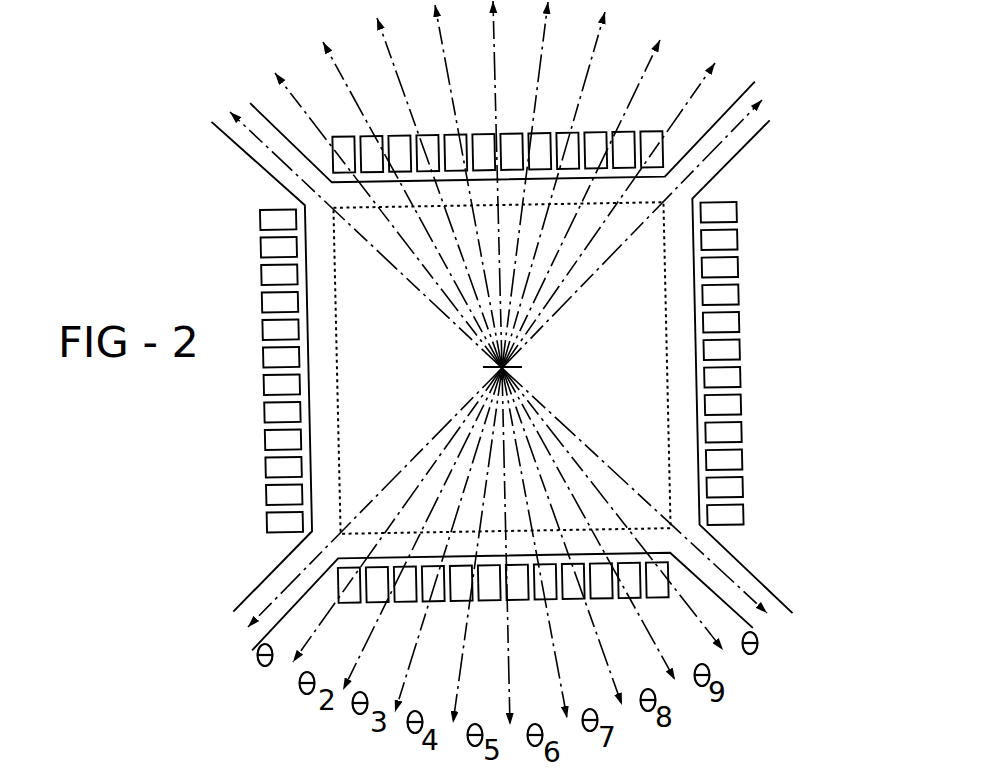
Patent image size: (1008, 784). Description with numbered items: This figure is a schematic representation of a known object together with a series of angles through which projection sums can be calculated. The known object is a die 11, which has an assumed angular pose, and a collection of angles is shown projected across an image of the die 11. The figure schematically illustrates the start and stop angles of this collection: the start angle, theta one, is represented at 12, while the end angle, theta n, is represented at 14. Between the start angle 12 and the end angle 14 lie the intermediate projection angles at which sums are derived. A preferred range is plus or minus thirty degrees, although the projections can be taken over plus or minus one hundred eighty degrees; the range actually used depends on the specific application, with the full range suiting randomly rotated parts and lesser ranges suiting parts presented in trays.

The die 11 is at (618, 386).
The start angle 12 is at (257, 666).
The end angle 14 is at (786, 664).